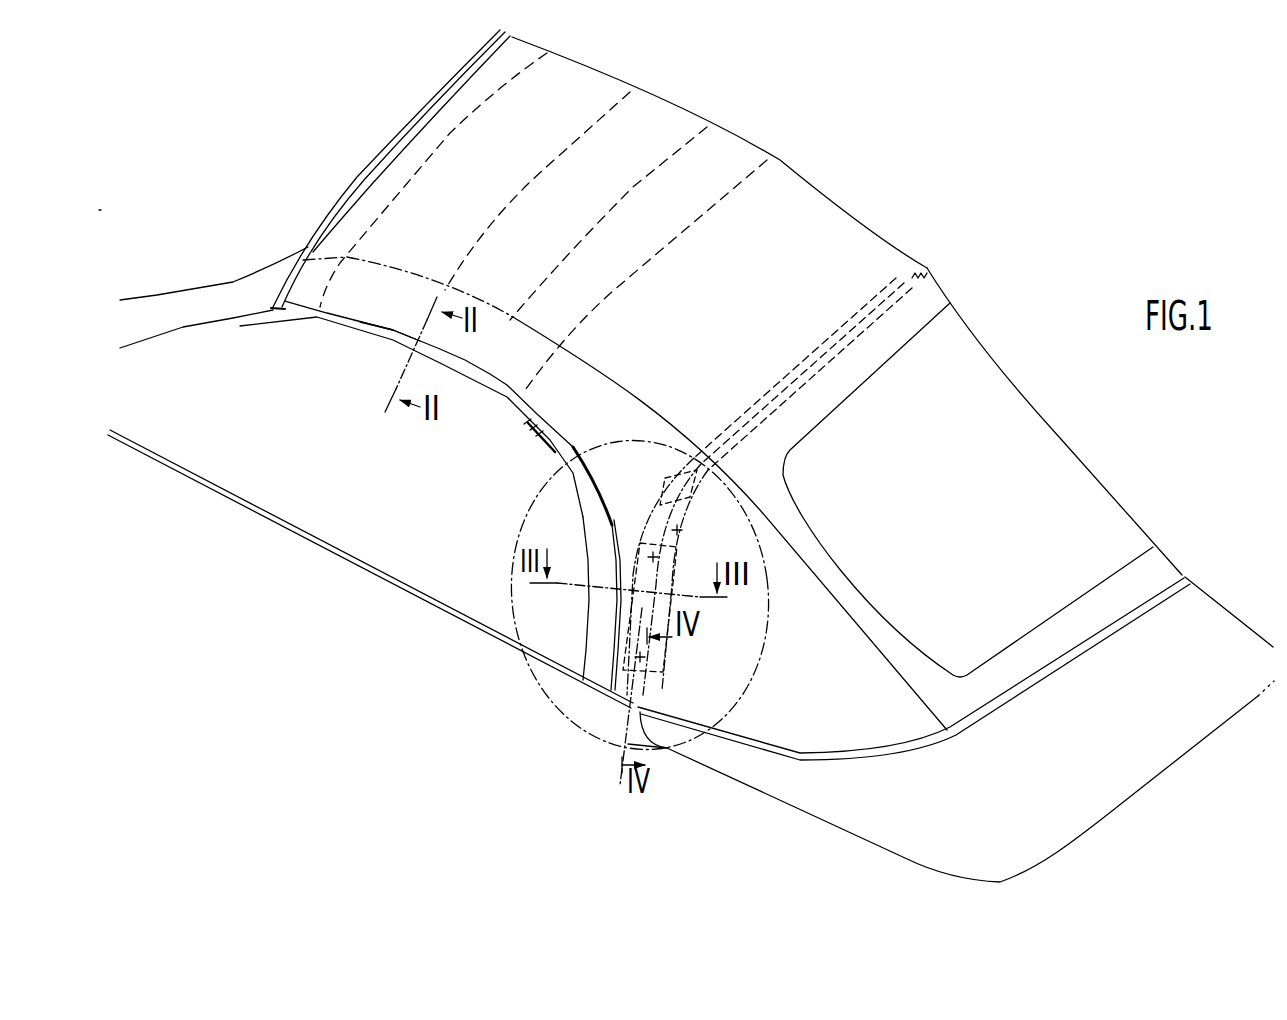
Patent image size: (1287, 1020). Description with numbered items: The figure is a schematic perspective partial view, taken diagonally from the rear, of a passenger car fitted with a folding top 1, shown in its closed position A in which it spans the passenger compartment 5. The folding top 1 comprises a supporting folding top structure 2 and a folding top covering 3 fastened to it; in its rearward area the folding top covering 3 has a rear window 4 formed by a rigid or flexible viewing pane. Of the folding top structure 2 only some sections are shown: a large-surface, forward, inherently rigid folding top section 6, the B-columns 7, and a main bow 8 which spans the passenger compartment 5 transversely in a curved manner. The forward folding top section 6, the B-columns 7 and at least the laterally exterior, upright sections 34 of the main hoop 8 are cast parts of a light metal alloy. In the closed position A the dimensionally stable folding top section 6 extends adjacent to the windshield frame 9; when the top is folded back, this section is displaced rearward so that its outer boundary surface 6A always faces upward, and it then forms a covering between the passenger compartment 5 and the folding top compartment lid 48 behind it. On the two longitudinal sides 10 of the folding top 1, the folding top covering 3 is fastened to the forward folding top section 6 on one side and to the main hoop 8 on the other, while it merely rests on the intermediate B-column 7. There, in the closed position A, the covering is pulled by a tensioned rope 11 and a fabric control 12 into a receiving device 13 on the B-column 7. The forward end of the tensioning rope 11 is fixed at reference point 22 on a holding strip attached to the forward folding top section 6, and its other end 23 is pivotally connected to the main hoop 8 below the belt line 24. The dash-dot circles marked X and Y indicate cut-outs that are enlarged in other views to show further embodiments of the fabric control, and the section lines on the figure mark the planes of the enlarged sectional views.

The folding top 1 is at (674, 97).
The closed position A is at (783, 156).
The folding top structure 2 is at (548, 455).
The folding top covering 3 is at (817, 220).
The rear window 4 is at (995, 382).
The passenger compartment 5 is at (260, 366).
The forward folding top section 6 is at (368, 338).
The outer boundary surface 6A is at (383, 320).
The B-column 7 is at (582, 518).
The main bow 8 is at (894, 278).
The windshield frame 9 is at (355, 176).
The longitudinal sides 10 is at (490, 406).
The tensioning rope 11 is at (618, 544).
The fabric control 12 is at (628, 610).
The receiving device 13 is at (615, 498).
The fixing point of tensioning rope 22 is at (542, 409).
The end of tensioning rope 23 is at (618, 727).
The belt line 24 is at (435, 612).
The upright sections of main hoop 34 is at (695, 502).
The cut-out X is at (703, 535).
The cut-out Y is at (758, 638).
The folding top compartment lid 48 is at (1213, 618).